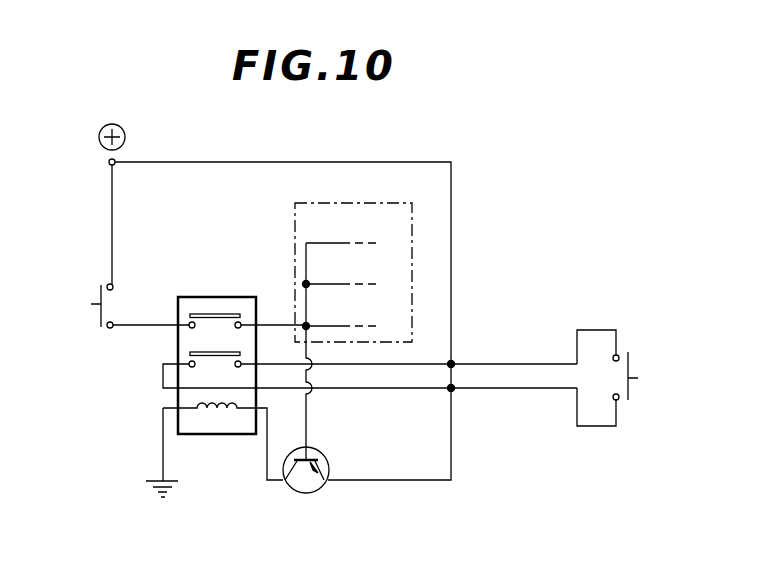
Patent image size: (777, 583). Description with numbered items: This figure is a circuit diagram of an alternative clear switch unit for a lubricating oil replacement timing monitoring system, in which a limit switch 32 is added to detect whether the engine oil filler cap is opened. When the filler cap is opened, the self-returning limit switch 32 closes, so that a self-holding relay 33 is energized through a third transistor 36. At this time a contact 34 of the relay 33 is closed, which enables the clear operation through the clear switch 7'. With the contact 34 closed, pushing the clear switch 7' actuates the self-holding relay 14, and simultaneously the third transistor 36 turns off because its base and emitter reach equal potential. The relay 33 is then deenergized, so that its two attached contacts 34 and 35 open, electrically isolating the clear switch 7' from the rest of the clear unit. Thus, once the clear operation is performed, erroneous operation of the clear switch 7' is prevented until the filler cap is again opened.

The clear switch 7' is at (123, 294).
The self-holding relay 14 is at (295, 218).
The limit switch 32 is at (632, 358).
The self-holding relay 33 is at (215, 435).
The contact 34 is at (213, 313).
The contact 35 is at (195, 353).
The third transistor 36 is at (305, 493).